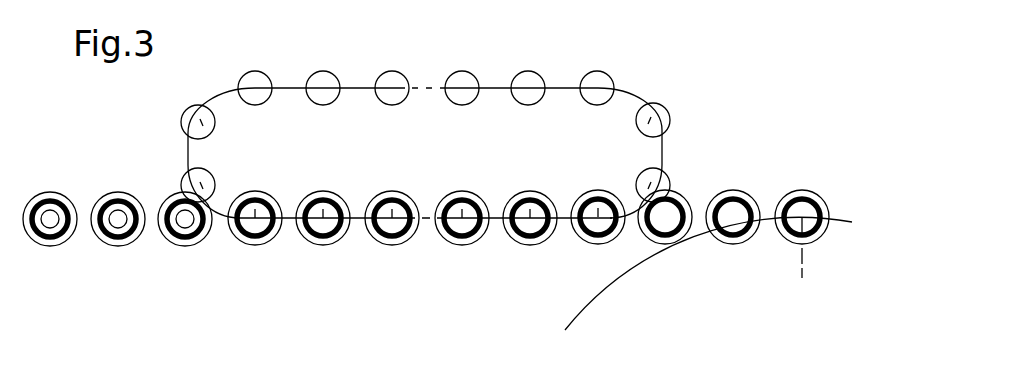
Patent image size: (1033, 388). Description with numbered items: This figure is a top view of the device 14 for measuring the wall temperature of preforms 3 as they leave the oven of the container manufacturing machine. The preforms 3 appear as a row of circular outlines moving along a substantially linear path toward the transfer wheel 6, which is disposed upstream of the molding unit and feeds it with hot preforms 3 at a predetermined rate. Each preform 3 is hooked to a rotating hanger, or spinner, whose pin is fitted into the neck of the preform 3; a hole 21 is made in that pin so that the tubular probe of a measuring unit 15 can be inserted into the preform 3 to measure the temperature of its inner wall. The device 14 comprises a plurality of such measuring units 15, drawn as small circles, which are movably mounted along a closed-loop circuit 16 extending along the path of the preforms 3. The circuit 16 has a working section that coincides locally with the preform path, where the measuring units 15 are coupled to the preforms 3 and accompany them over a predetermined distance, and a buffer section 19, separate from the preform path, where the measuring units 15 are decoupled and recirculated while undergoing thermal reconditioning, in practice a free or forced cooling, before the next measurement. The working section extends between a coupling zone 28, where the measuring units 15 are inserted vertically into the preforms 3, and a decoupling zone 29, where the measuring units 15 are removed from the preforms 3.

The preform 3 is at (45, 247).
The hole 21 is at (49, 212).
The device 14 is at (637, 70).
The measuring units 15 is at (257, 72).
The closed-loop circuit 16 is at (497, 87).
The buffer section 19 is at (567, 87).
The coupling zone 28 is at (248, 230).
The decoupling zone 29 is at (607, 229).
The transfer wheel 6 is at (583, 306).